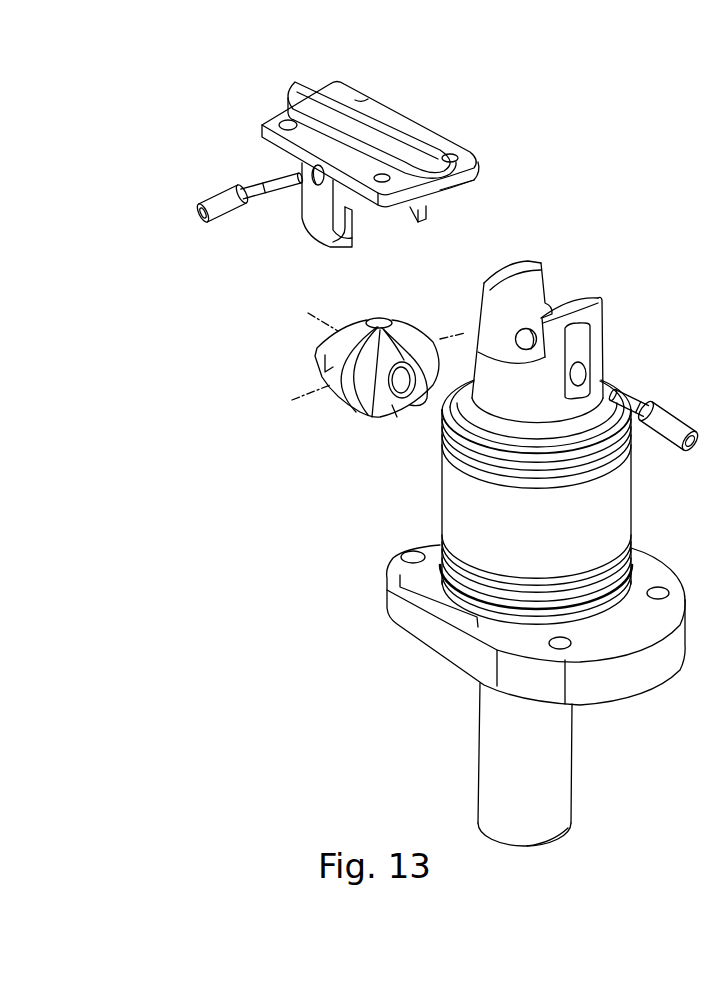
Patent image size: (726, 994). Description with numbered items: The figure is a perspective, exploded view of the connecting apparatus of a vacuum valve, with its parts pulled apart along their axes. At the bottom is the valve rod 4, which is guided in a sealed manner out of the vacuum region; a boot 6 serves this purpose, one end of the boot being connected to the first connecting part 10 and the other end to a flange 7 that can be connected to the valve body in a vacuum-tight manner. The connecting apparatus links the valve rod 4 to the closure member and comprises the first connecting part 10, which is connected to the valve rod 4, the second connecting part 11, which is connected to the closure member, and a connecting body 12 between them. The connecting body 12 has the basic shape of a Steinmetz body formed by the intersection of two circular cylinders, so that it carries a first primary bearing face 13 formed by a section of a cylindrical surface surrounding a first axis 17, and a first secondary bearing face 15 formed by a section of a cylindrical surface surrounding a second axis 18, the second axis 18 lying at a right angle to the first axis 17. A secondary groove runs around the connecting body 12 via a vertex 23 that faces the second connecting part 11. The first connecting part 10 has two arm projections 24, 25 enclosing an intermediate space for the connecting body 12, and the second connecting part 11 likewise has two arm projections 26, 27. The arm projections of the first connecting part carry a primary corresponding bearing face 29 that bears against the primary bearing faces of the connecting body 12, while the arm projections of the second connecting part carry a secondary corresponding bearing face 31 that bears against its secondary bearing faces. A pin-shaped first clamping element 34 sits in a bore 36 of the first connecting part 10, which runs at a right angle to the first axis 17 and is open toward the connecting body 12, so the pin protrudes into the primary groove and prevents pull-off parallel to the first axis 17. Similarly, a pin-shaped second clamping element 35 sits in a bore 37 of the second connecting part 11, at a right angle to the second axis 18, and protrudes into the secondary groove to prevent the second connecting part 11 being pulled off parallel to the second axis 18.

The valve rod 4 is at (550, 782).
The boot 6 is at (595, 590).
The flange 7 is at (635, 658).
The first connecting part 10 is at (548, 390).
The second connecting part 11 is at (403, 120).
The connecting body 12 is at (419, 417).
The first primary bearing face 13 is at (388, 415).
The first secondary bearing face 15 is at (315, 369).
The first axis 17 is at (300, 397).
The second axis 18 is at (308, 313).
The vertex 23 is at (384, 328).
The arm projection 24 is at (597, 313).
The arm projection 25 is at (530, 259).
The arm projection 26 is at (330, 232).
The arm projection 27 is at (478, 184).
The primary corresponding bearing face 29 is at (515, 284).
The secondary corresponding bearing face 31 is at (419, 224).
The first clamping element 34 is at (652, 415).
The second clamping element 35 is at (247, 197).
The bore 36 is at (580, 373).
The bore 37 is at (300, 193).